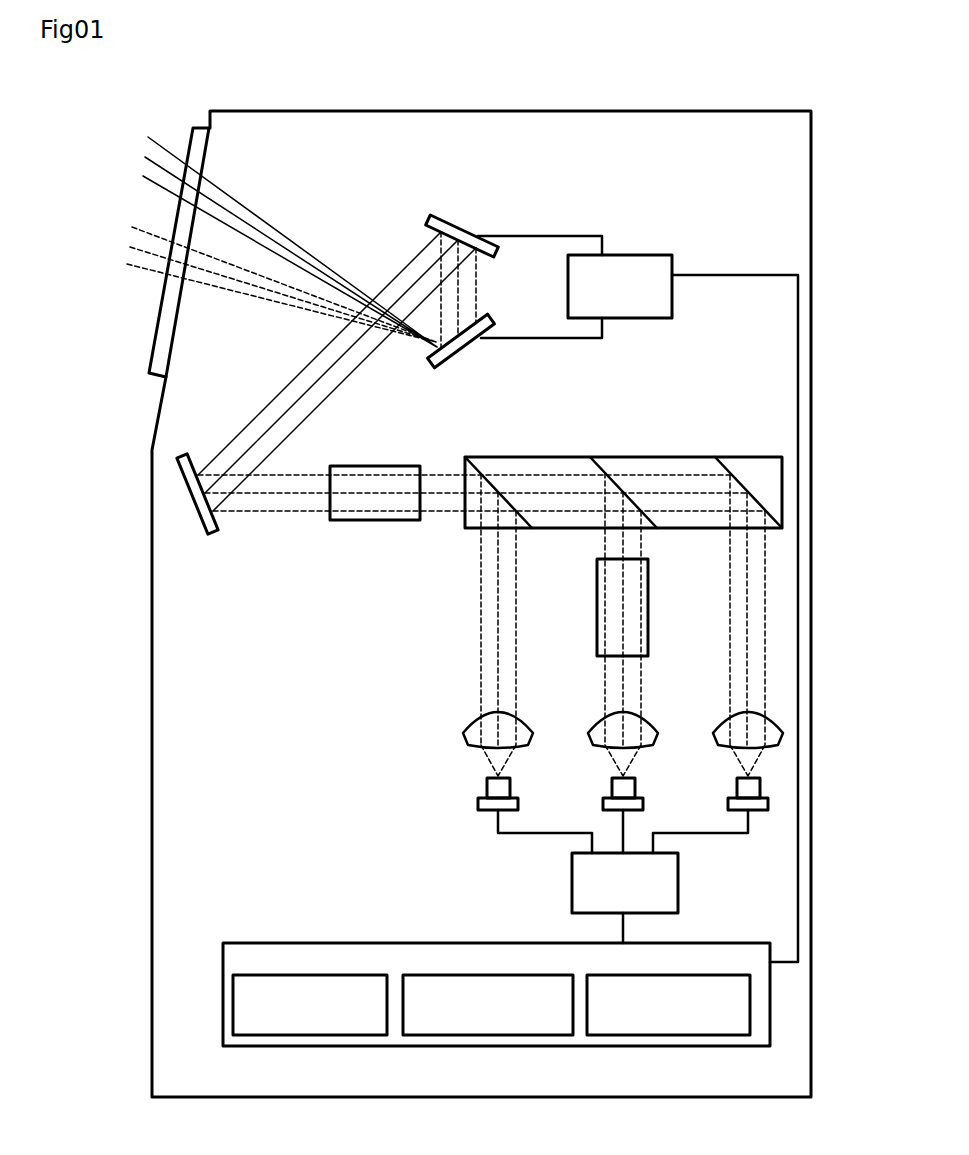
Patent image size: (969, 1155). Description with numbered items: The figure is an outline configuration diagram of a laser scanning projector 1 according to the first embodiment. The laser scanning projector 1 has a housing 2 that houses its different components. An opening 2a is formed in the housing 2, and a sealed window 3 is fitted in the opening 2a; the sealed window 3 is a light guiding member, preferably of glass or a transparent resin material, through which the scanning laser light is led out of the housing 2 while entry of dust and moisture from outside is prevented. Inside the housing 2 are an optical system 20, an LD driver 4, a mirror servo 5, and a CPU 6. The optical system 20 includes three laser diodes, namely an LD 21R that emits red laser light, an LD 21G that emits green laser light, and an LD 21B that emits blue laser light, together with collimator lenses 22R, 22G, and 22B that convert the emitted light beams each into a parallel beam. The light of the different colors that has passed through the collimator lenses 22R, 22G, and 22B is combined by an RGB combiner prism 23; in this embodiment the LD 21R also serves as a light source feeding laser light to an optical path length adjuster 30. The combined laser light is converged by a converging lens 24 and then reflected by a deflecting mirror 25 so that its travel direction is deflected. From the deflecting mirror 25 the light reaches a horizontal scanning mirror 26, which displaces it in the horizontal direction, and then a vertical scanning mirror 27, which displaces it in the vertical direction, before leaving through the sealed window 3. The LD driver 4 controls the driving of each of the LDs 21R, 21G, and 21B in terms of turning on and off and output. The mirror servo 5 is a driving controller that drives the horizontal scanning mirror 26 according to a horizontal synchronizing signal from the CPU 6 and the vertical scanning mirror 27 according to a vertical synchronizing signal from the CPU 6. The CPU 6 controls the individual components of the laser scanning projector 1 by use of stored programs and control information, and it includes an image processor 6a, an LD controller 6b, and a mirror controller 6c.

The laser scanning projector 1 is at (792, 68).
The housing 2 is at (666, 110).
The opening 2a is at (221, 134).
The sealed window 3 is at (194, 126).
The LD driver 4 is at (680, 888).
The mirror servo 5 is at (652, 254).
The CPU 6 is at (428, 942).
The image processor 6a is at (300, 1036).
The LD controller 6b is at (487, 1036).
The mirror controller 6c is at (672, 1036).
The optical system 20 is at (339, 763).
The LD 21G is at (477, 803).
The LD 21R is at (602, 803).
The LD 21B is at (727, 803).
The collimator lens 22G is at (470, 745).
The collimator lens 22R is at (595, 745).
The collimator lens 22B is at (720, 745).
The RGB combiner prism 23 is at (652, 456).
The converging lens 24 is at (388, 465).
The deflecting mirror 25 is at (205, 537).
The horizontal scanning mirror 26 is at (426, 221).
The vertical scanning mirror 27 is at (446, 368).
The optical path length adjuster 30 is at (649, 597).